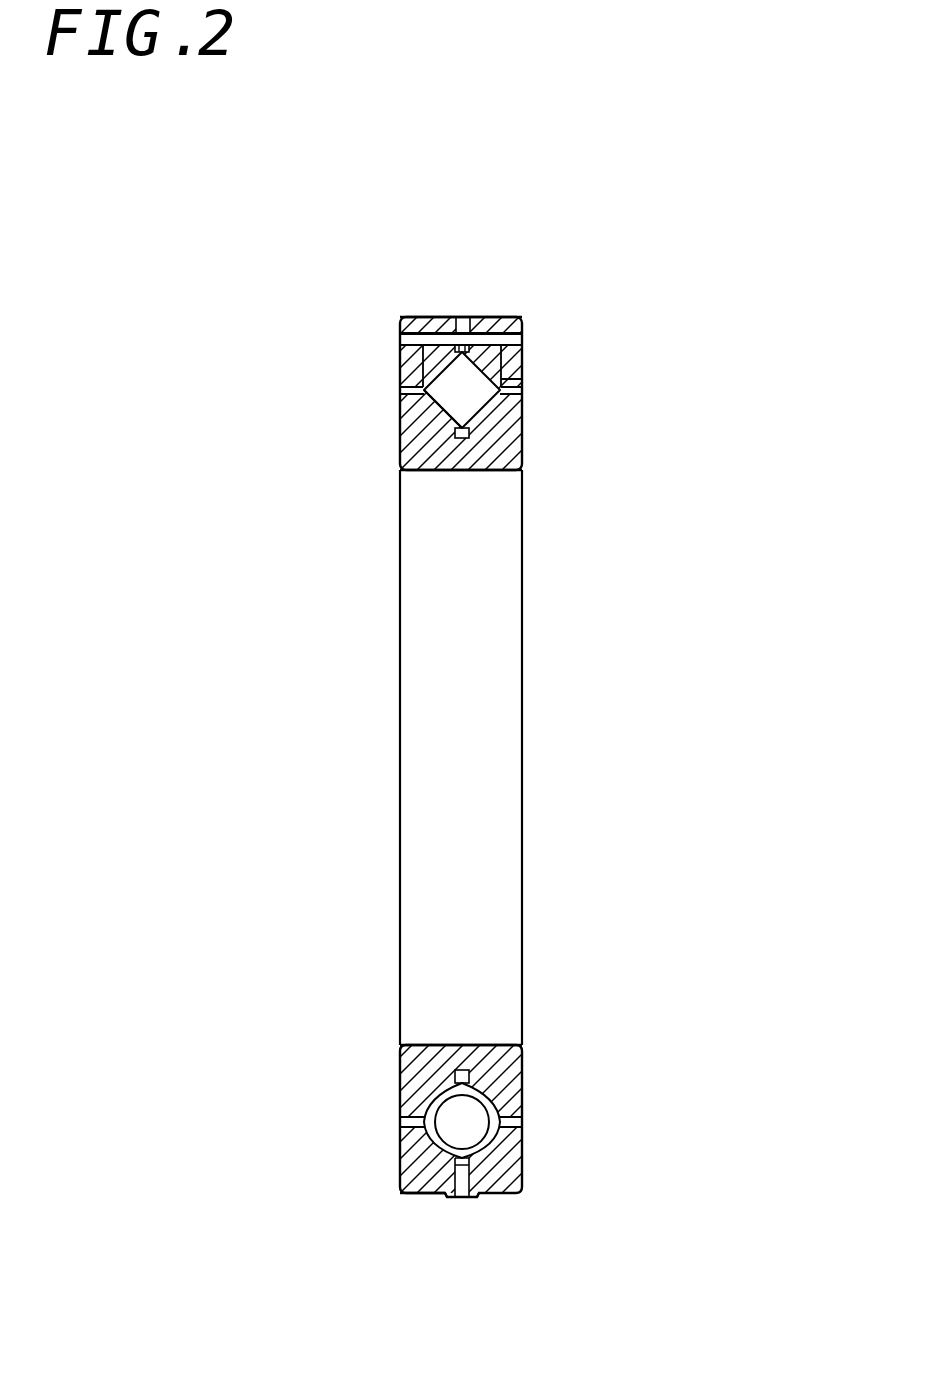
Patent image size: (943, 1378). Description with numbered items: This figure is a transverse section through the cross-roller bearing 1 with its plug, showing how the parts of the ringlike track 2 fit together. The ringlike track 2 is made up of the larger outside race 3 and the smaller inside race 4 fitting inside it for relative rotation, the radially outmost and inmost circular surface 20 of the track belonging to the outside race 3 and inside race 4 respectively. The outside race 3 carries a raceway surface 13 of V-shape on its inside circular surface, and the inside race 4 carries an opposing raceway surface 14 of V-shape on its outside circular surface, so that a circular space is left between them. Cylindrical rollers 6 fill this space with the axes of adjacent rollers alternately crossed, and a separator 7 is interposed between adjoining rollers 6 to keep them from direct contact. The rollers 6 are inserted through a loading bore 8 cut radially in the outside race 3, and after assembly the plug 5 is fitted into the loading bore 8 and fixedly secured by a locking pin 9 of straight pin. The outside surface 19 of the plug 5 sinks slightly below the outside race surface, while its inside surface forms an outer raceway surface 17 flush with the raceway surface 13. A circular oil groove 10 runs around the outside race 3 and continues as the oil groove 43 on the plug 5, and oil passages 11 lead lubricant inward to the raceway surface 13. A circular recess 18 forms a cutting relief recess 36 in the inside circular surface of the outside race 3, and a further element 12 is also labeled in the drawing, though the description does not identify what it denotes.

The cross-roller bearing 1 is at (615, 623).
The ringlike track 2 is at (418, 418).
The outside race 3 is at (515, 368).
The inside race 4 is at (502, 435).
The plug 5 is at (487, 318).
The roller 6 is at (405, 440).
The separator 7 is at (490, 1105).
The loading bore 8 is at (420, 365).
The locking pin 9 is at (520, 337).
The circular oil groove 10 is at (452, 1197).
The oil passages 11 is at (458, 1182).
The pin 12 is at (457, 442).
The raceway surface 13 is at (520, 1135).
The raceway surface 14 is at (500, 470).
The outer raceway surface 17 is at (522, 380).
The circular recess 18 is at (455, 320).
The outside surface 19 is at (437, 318).
The radially outmost or inmost circular surface 20 is at (505, 318).
The cutting relief recess 36 is at (470, 1165).
The oil groove 43 is at (462, 318).